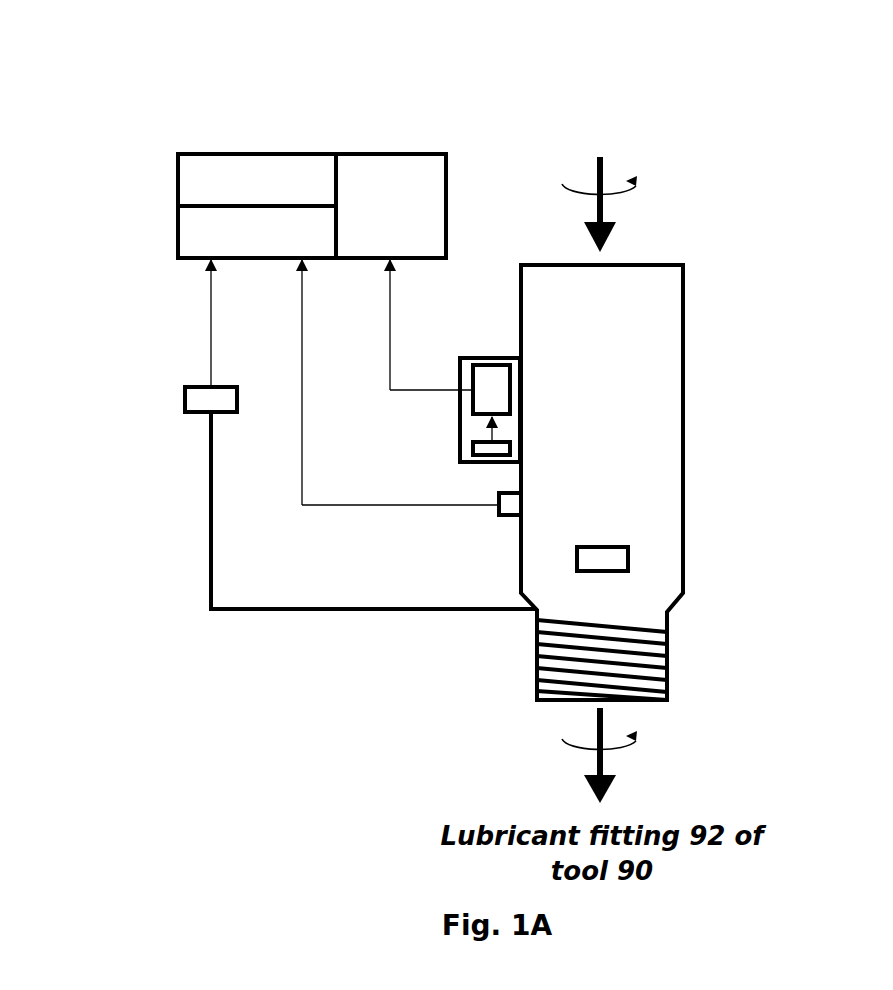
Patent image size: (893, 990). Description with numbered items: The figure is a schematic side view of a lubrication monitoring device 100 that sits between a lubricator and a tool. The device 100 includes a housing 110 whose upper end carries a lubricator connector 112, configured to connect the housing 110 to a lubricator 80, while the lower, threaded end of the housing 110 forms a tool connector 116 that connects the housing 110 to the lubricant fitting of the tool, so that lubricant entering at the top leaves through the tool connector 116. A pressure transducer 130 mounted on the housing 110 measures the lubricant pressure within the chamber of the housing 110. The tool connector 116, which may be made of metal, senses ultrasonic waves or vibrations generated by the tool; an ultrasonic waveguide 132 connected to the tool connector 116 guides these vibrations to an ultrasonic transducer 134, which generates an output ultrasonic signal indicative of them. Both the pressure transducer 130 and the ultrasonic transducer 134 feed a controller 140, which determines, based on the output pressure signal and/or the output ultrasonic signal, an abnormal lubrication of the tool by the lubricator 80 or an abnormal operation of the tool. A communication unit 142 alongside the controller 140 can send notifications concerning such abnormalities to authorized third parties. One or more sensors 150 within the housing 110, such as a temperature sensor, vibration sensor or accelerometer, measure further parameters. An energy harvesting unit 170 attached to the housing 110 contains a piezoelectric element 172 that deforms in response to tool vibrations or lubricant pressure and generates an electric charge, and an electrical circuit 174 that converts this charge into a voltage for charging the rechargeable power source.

The lubrication monitoring device 100 is at (101, 56).
The lubricator 80 is at (603, 171).
The housing 110 is at (638, 437).
The lubricator connector 112 is at (668, 244).
The tool connector 116 is at (682, 660).
The pressure transducer 130 is at (512, 508).
The ultrasonic waveguide 132 is at (443, 611).
The ultrasonic transducer 134 is at (185, 404).
The controller 140 is at (273, 210).
The communication unit 142 is at (177, 173).
The sensors 150 is at (628, 554).
The energy harvesting unit 170 is at (441, 396).
The piezoelectric element 172 is at (472, 448).
The electrical circuit 174 is at (493, 377).